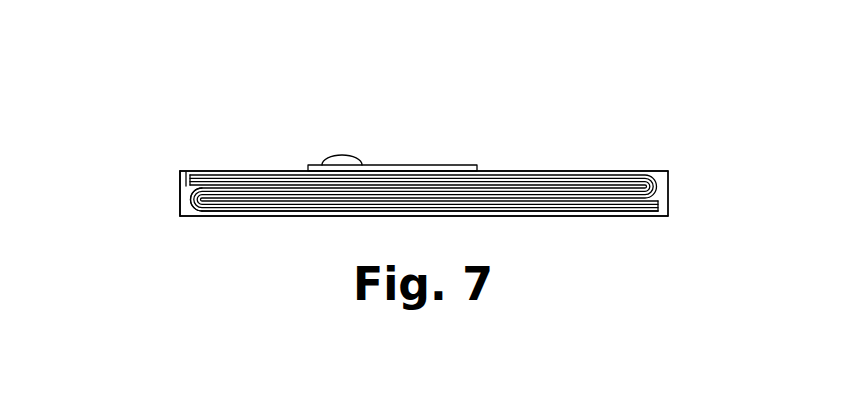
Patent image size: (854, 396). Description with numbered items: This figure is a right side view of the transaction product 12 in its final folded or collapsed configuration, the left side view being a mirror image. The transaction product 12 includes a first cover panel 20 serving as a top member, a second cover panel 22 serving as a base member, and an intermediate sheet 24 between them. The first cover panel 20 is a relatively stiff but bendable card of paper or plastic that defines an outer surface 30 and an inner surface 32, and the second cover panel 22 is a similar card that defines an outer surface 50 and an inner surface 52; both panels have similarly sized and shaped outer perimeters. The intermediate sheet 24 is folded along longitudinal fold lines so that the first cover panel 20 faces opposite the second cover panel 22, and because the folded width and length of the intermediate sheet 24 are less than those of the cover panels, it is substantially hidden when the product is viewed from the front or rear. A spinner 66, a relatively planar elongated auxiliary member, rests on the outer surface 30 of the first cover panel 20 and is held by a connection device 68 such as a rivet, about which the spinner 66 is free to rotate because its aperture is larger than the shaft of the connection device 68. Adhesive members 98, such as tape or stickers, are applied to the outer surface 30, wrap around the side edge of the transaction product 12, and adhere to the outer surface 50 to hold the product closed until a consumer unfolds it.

The transaction product 12 is at (206, 90).
The first cover panel 20 is at (668, 172).
The second cover panel 22 is at (670, 217).
The intermediate sheet 24 is at (179, 202).
The outer surface 30 is at (607, 170).
The inner surface 32 is at (179, 182).
The outer surface 50 is at (620, 217).
The inner surface 52 is at (179, 213).
The spinner 66 is at (413, 164).
The connection device 68 is at (343, 156).
The adhesive member 98 is at (179, 192).